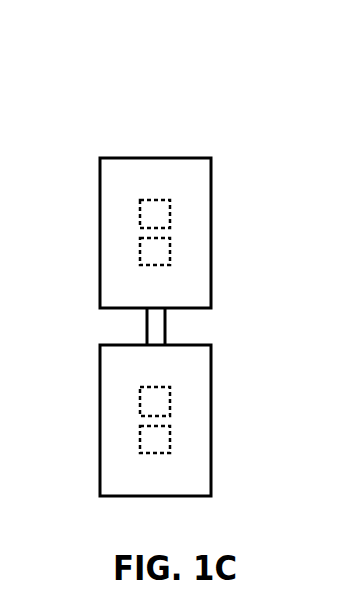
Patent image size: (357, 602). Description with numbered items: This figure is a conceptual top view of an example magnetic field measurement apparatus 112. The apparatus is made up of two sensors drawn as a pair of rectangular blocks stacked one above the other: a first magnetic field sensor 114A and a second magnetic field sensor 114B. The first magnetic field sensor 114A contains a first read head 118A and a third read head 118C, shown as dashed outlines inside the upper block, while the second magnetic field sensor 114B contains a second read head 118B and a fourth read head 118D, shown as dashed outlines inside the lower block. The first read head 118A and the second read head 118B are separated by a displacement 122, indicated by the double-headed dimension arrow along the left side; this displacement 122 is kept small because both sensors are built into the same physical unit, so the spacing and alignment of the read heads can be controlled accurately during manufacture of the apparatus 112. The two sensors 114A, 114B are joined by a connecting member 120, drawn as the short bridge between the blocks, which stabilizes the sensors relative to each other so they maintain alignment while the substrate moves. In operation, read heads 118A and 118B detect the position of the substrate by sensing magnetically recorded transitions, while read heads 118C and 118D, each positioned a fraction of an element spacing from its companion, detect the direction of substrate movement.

The magnetic field measurement apparatus 112 is at (187, 53).
The first magnetic field sensor 114A is at (179, 296).
The second magnetic field sensor 114B is at (179, 380).
The first read head 118A is at (171, 250).
The second read head 118B is at (171, 400).
The third read head 118C is at (157, 199).
The fourth read head 118D is at (152, 454).
The connecting member 120 is at (167, 328).
The displacement 122 is at (80, 253).